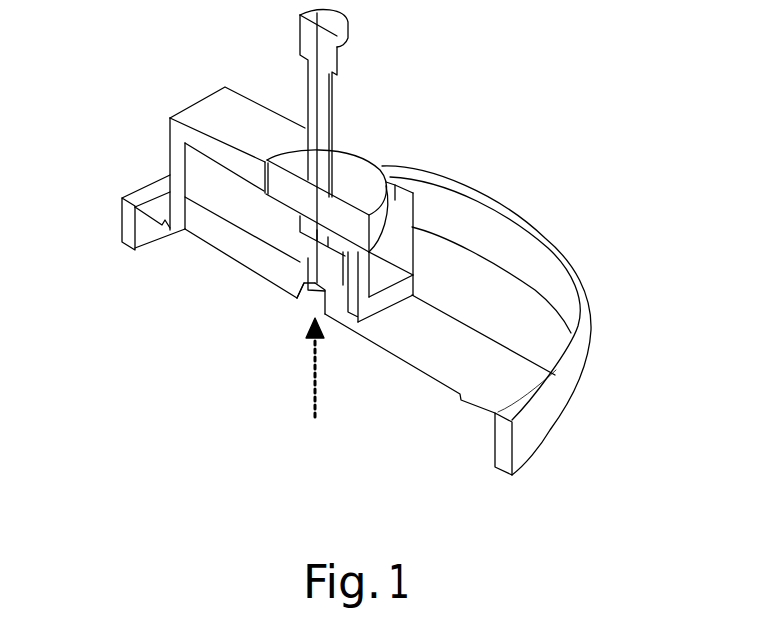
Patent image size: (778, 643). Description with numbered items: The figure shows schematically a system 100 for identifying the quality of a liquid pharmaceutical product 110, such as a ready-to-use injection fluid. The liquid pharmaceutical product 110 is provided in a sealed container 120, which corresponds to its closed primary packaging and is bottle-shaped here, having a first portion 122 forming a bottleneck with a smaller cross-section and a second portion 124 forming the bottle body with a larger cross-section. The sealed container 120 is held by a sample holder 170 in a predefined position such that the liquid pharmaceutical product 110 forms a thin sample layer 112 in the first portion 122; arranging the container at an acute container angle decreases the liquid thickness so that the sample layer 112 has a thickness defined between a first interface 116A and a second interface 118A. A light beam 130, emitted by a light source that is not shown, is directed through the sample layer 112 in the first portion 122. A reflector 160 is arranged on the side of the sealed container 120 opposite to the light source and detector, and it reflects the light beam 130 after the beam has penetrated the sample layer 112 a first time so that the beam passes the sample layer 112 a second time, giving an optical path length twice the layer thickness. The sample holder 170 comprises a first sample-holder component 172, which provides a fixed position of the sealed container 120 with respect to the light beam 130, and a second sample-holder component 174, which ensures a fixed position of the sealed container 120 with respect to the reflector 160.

The system 100 is at (457, 64).
The liquid pharmaceutical product 110 is at (247, 249).
The sample layer 112 is at (312, 277).
The first interface 116A is at (293, 268).
The second interface 118A is at (327, 292).
The sealed container 120 is at (200, 180).
The first portion 122 is at (305, 320).
The second portion 124 is at (186, 252).
The light beam 130 is at (304, 424).
The reflector 160 is at (350, 170).
The sample holder 170 is at (352, 302).
The first sample-holder component 172 is at (394, 287).
The second sample-holder component 174 is at (403, 224).